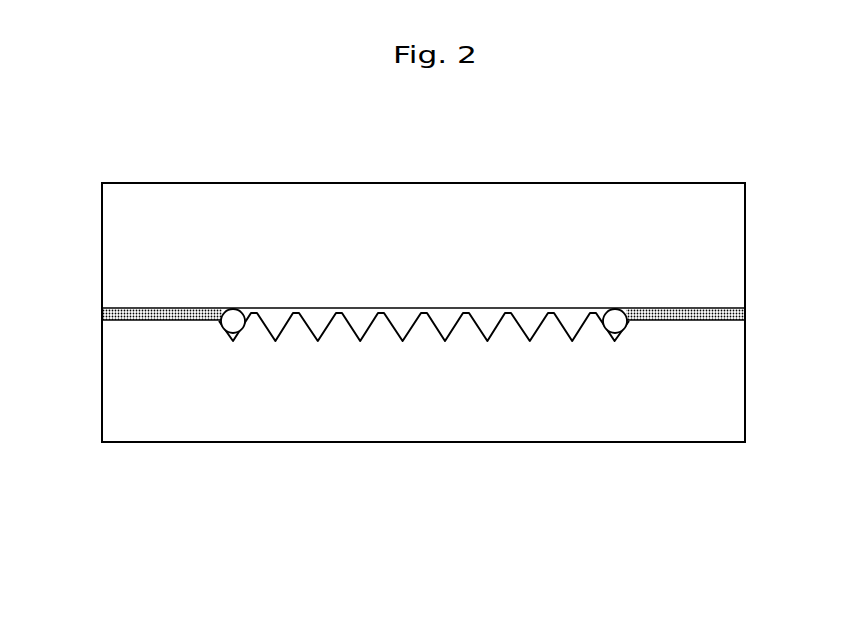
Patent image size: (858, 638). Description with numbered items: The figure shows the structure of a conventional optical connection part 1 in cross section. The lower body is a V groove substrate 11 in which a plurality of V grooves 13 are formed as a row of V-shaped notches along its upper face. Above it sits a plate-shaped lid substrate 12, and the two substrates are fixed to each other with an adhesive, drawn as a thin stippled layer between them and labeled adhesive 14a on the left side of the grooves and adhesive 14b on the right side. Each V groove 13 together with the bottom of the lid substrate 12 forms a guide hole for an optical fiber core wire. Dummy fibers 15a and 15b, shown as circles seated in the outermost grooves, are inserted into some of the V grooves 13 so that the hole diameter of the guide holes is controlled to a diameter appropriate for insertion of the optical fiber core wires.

The optical connection part 1 is at (720, 156).
The V groove substrate 11 is at (106, 382).
The lid substrate 12 is at (107, 232).
The V grooves 13 is at (324, 326).
The adhesive 14a is at (106, 310).
The adhesive 14b is at (745, 311).
The dummy fiber 15a is at (233, 310).
The dummy fiber 15b is at (614, 310).